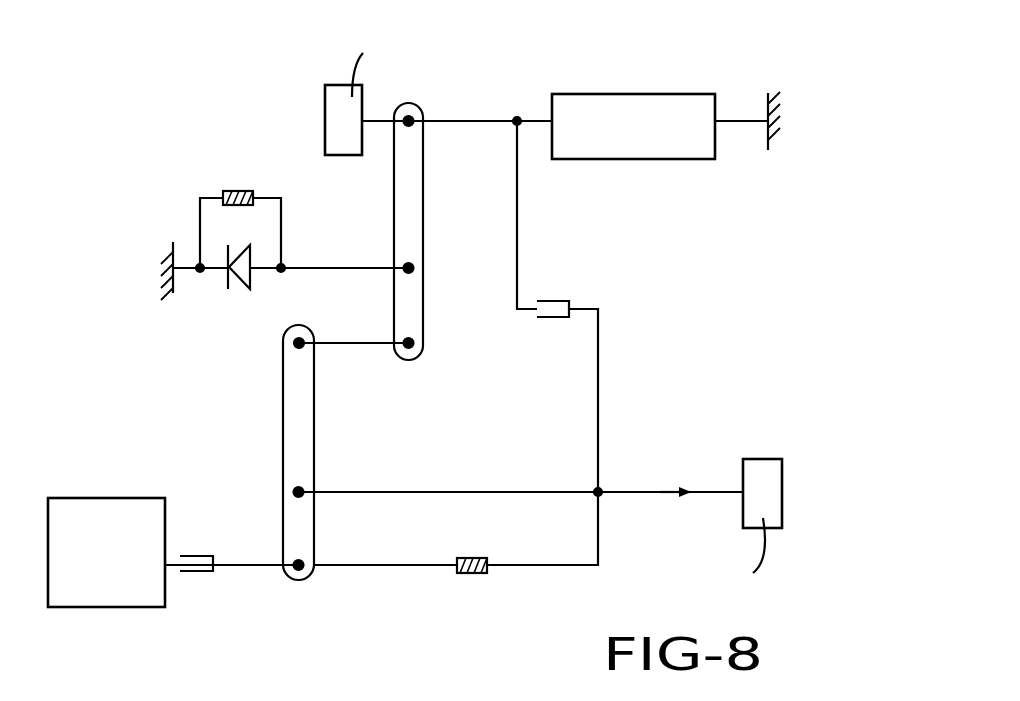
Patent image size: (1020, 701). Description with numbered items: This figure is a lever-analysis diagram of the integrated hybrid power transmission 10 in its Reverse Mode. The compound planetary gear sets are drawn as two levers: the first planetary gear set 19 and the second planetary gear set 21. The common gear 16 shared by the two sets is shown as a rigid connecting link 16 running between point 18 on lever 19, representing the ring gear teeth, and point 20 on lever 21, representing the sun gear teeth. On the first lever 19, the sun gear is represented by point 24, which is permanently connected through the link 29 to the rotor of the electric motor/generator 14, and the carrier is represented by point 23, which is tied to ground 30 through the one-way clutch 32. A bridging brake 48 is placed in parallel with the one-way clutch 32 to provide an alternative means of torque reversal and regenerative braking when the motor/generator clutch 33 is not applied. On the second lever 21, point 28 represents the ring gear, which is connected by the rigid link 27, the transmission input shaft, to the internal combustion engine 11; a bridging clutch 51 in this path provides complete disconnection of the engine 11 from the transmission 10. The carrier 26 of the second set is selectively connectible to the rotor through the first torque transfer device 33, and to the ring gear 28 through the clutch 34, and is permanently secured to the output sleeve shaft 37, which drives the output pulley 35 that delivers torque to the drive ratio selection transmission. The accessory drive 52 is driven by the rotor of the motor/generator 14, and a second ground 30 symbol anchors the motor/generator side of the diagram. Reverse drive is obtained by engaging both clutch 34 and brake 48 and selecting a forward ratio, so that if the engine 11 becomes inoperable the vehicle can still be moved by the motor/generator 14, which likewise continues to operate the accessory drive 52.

The integrated hybrid power transmission 10 is at (226, 129).
The internal combustion engine 11 is at (106, 552).
The electric motor/generator 14 is at (697, 102).
The common gear 16 is at (358, 343).
The ring gear teeth 18 is at (412, 339).
The first planetary gear set 19 is at (396, 216).
The sun gear teeth 20 is at (303, 349).
The second planetary gear set 21 is at (288, 397).
The carrier 23 is at (407, 266).
The sun gear 24 is at (410, 123).
The carrier 26 is at (296, 488).
The rigid link 27 is at (262, 568).
The ring gear 28 is at (303, 561).
The link 29 is at (487, 121).
The ground 30 is at (773, 133).
The one-way clutch 32 is at (250, 286).
The first torque transfer device 33 is at (548, 301).
The clutch 34 is at (472, 574).
The pulley 35 is at (763, 471).
The output sleeve shaft 37 is at (543, 494).
The brake 48 is at (233, 191).
The clutch 51 is at (196, 556).
The accessory drive 52 is at (338, 97).